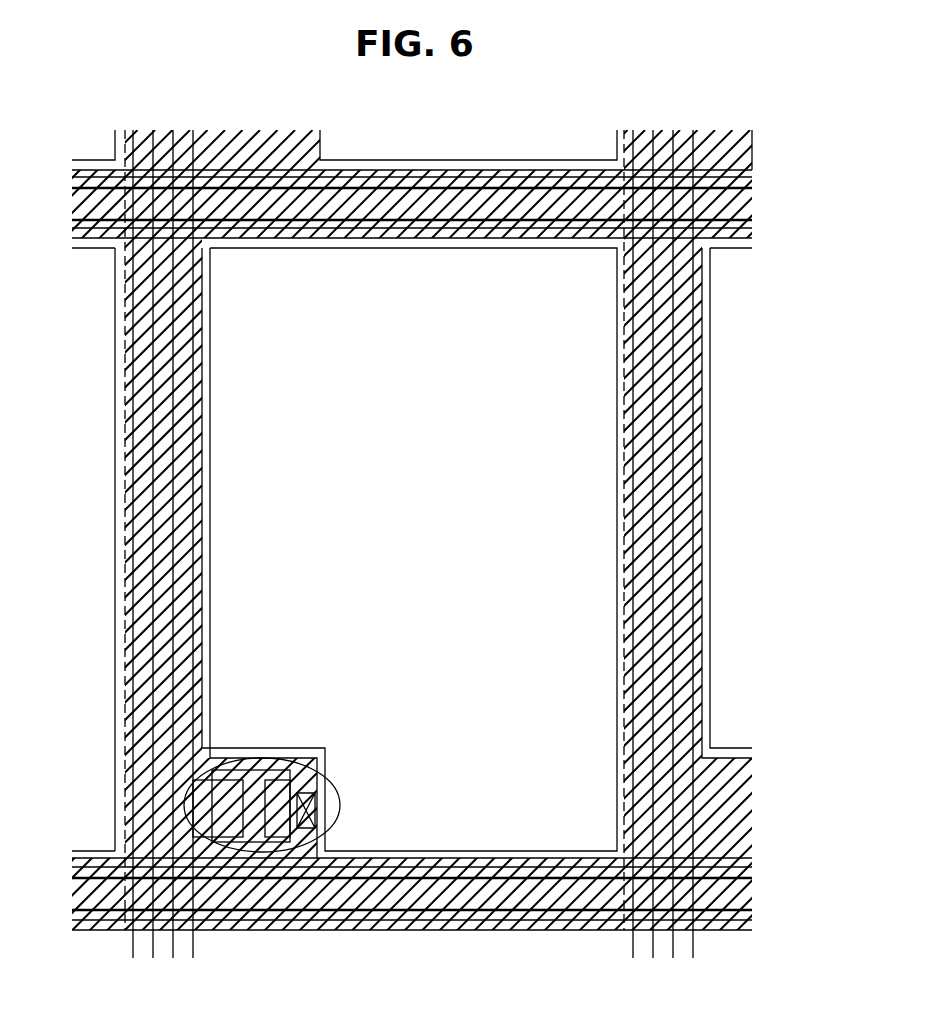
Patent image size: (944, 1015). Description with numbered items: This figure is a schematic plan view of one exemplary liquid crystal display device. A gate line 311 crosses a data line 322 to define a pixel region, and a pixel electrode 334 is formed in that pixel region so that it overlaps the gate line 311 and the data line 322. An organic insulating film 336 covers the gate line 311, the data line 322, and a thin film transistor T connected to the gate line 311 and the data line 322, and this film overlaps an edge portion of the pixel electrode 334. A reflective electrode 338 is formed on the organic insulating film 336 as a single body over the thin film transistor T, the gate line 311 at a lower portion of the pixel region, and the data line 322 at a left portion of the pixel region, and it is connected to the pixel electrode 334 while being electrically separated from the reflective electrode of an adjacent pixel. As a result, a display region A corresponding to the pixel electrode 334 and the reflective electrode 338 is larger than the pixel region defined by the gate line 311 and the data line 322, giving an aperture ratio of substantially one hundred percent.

The gate line 311 is at (395, 928).
The data line 322 is at (126, 687).
The pixel electrode 334 is at (175, 577).
The organic insulating film 336 is at (212, 643).
The reflective electrode 338 is at (204, 732).
The display region A is at (624, 490).
The thin film transistor T is at (340, 798).